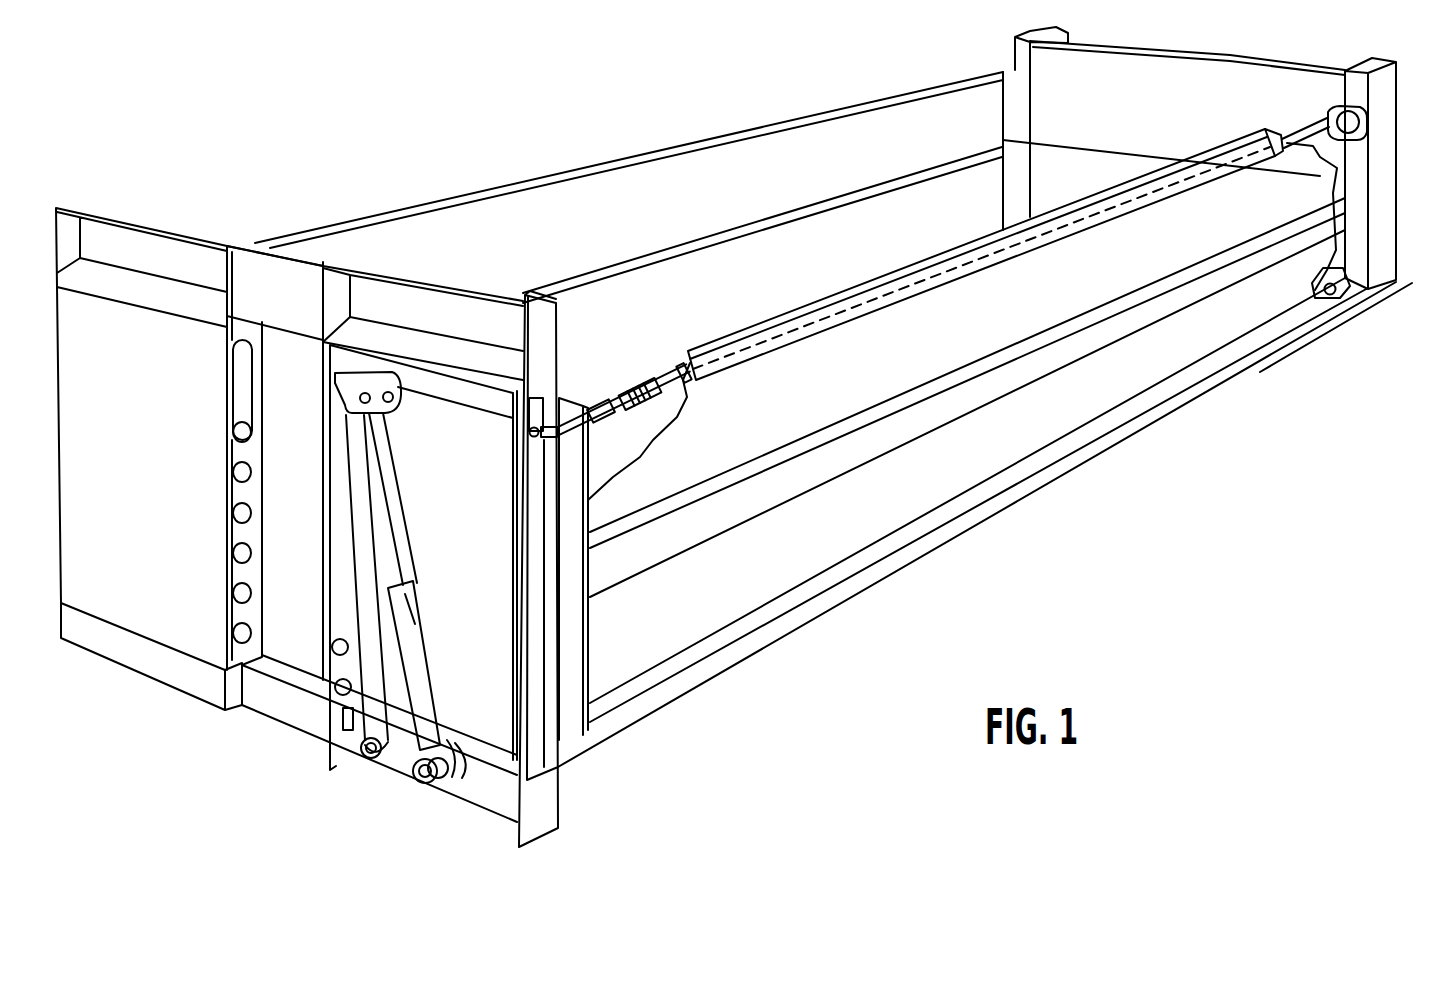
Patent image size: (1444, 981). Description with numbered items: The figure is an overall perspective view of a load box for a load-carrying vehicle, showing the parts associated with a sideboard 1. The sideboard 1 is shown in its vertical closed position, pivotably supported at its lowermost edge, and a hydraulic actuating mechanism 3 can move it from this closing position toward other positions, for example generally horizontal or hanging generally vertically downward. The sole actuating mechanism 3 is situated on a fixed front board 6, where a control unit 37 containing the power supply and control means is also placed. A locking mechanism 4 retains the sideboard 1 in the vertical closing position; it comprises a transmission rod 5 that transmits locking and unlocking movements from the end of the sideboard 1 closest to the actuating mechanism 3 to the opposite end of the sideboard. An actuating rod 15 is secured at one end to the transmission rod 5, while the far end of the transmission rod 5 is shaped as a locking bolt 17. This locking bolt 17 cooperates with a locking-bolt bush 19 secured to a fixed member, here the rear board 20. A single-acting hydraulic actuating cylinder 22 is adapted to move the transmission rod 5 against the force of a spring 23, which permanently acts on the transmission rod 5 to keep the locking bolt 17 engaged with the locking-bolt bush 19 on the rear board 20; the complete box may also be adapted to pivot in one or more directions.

The sideboard 1 is at (1013, 319).
The hydraulic actuating mechanism 3 is at (398, 487).
The locking mechanism 4 is at (940, 230).
The transmission rod 5 is at (688, 372).
The front board 6 is at (560, 745).
The actuating rod 15 is at (473, 427).
The locking bolt 17 is at (1327, 122).
The locking-bolt bush 19 is at (1365, 127).
The rear board 20 is at (1154, 118).
The hydraulic actuating cylinder 22 is at (600, 398).
The spring 23 is at (637, 388).
The control unit 37 is at (284, 306).